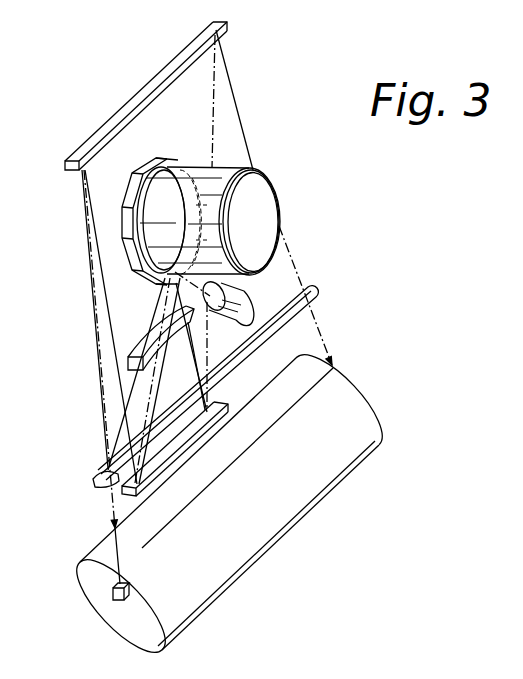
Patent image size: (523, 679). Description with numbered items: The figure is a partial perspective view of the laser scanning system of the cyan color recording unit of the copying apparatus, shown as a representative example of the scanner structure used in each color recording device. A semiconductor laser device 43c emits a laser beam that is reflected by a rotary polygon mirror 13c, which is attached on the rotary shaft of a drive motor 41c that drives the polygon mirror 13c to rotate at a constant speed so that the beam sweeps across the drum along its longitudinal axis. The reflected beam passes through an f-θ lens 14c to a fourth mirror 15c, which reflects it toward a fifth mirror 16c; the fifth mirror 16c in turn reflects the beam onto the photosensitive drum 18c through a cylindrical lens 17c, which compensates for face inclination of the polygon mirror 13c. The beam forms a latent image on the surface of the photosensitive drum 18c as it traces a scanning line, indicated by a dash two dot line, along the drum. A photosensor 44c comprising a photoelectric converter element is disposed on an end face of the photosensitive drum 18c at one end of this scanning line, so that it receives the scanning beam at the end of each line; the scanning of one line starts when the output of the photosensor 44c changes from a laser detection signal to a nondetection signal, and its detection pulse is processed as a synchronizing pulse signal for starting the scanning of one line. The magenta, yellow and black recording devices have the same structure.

The polygon mirror 13c is at (158, 163).
The f-θ lens 14c is at (133, 347).
The fourth mirror 15c is at (215, 412).
The fifth mirror 16c is at (113, 121).
The cylindrical lens 17c is at (95, 474).
The photosensitive drum 18c is at (362, 390).
The drive motor 41c is at (236, 168).
The semiconductor laser device 43c is at (212, 288).
The photosensor 44c is at (112, 594).